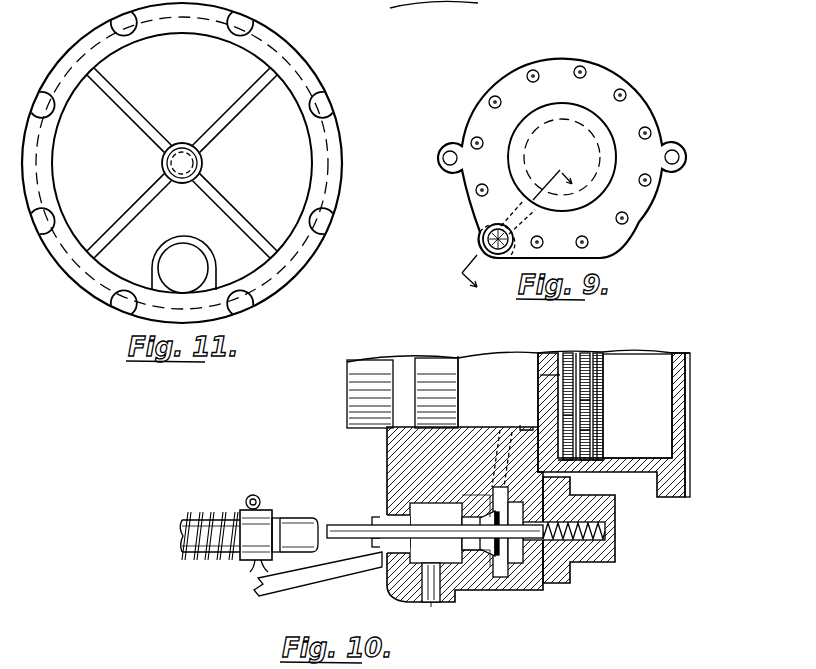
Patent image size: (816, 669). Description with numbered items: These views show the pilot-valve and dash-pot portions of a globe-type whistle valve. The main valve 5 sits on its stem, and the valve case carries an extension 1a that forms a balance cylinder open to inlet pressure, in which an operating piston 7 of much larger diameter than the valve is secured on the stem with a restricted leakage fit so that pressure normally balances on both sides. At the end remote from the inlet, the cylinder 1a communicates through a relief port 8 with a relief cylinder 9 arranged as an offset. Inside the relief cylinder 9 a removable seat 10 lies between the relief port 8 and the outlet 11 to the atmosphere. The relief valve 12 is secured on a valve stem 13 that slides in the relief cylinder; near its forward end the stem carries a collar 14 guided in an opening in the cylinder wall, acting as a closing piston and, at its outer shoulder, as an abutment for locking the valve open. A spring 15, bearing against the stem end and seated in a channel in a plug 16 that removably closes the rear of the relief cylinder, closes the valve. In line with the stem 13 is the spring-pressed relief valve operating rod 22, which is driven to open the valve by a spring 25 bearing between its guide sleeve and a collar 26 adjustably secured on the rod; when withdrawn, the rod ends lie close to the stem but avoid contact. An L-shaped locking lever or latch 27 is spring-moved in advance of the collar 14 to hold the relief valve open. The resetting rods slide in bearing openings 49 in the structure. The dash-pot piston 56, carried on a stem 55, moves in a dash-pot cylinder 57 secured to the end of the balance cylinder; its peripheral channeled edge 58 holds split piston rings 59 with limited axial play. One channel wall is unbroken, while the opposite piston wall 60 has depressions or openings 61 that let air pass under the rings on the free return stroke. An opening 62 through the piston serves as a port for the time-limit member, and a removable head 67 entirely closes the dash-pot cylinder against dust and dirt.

In FIG. 9, the extension forming a cylinder 1a is at (580, 103).
In FIG. 10, the extension forming a cylinder 1a is at (500, 357).
In FIG. 10, the main valve 5 is at (370, 368).
In FIG. 9, the operating piston 7 is at (597, 133).
In FIG. 10, the operating piston 7 is at (432, 368).
In FIG. 9, the relief port 8 is at (528, 207).
In FIG. 10, the relief port 8 is at (530, 425).
In FIG. 9, the relief cylinder 9 is at (488, 245).
In FIG. 10, the relief cylinder 9 is at (498, 568).
In FIG. 9, the removable seat 10 is at (511, 219).
In FIG. 10, the removable seat 10 is at (480, 516).
In FIG. 10, the outlet 11 is at (433, 606).
In FIG. 10, the relief valve 12 is at (502, 548).
In FIG. 10, the valve stem 13 is at (455, 538).
In FIG. 10, the collar 14 is at (380, 518).
In FIG. 10, the spring 15 is at (607, 529).
In FIG. 10, the plug 16 is at (607, 507).
In FIG. 10, the relief valve operating rod 22 is at (183, 523).
In FIG. 10, the spring 25 is at (205, 556).
In FIG. 10, the collar 26 is at (258, 543).
In FIG. 10, the L-shaped locking lever or latch 27 is at (275, 588).
In FIG. 9, the bearing openings 49 is at (443, 158).
In FIG. 11, the stem 55 is at (169, 165).
In FIG. 11, the dash-pot piston 56 is at (182, 163).
In FIG. 10, the dash-pot piston 56 is at (598, 350).
In FIG. 10, the dash-pot cylinder 57 is at (633, 360).
In FIG. 10, the peripheral channeled edge 58 is at (540, 375).
In FIG. 11, the split piston rings 59 is at (333, 106).
In FIG. 10, the split piston rings 59 is at (600, 421).
In FIG. 11, the piston wall 60 is at (336, 192).
In FIG. 10, the piston wall 60 is at (603, 407).
In FIG. 11, the depressions or openings 61 is at (332, 219).
In FIG. 11, the opening 62 is at (178, 252).
In FIG. 10, the head 67 is at (687, 372).